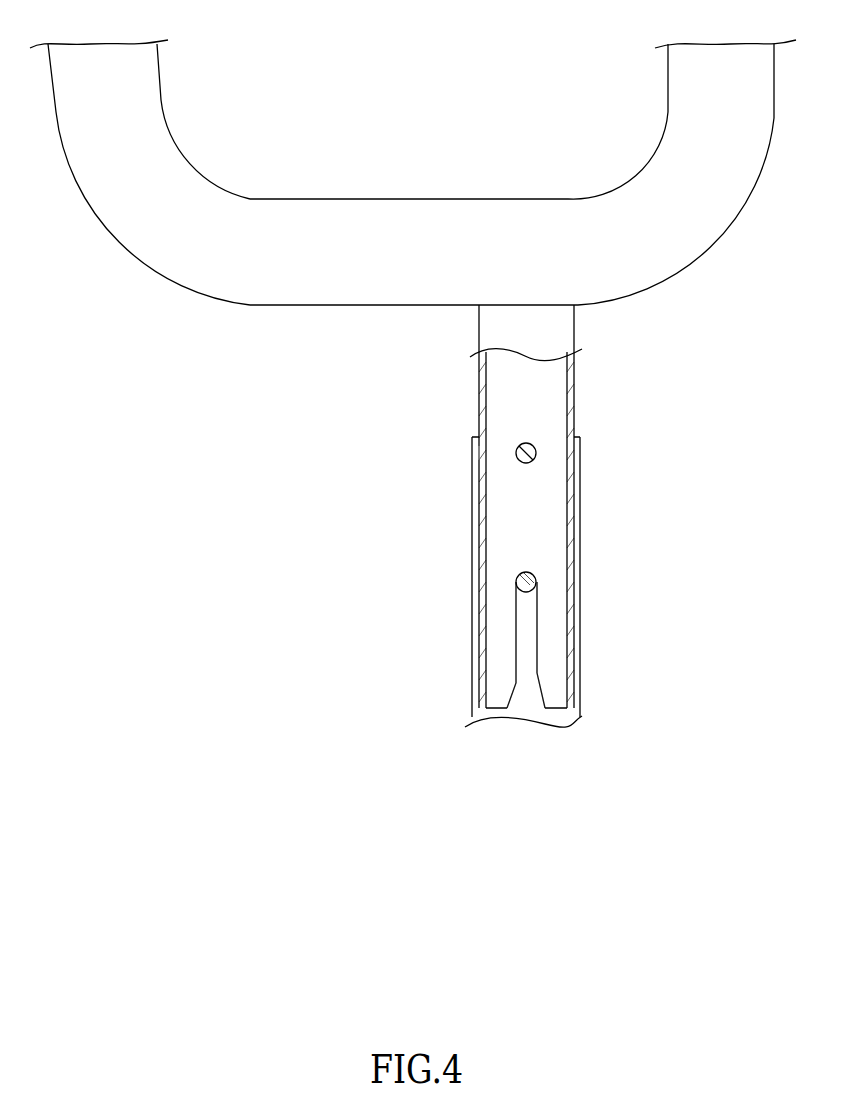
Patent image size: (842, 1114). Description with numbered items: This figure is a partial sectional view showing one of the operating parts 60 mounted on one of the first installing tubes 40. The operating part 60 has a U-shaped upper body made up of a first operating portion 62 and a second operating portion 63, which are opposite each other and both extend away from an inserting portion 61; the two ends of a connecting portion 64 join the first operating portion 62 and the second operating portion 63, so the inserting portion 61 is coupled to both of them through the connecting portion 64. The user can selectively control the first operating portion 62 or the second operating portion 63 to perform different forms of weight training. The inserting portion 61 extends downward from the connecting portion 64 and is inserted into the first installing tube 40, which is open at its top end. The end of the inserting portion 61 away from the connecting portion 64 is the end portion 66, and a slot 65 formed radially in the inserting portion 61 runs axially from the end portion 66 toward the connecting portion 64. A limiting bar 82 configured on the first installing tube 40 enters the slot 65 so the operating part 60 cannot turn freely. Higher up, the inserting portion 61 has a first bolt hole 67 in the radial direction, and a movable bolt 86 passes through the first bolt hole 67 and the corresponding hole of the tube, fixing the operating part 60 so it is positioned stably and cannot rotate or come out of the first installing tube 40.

The operating part 60 is at (413, 213).
The inserting portion 61 is at (575, 374).
The first operating portion 62 is at (668, 78).
The second operating portion 63 is at (162, 77).
The connecting portion 64 is at (358, 307).
The slot 65 is at (537, 653).
The end portion 66 is at (555, 712).
The first bolt hole 67 is at (536, 451).
The first installing tube 40 is at (580, 654).
The limiting bar 82 is at (524, 592).
The movable bolt 86 is at (517, 453).